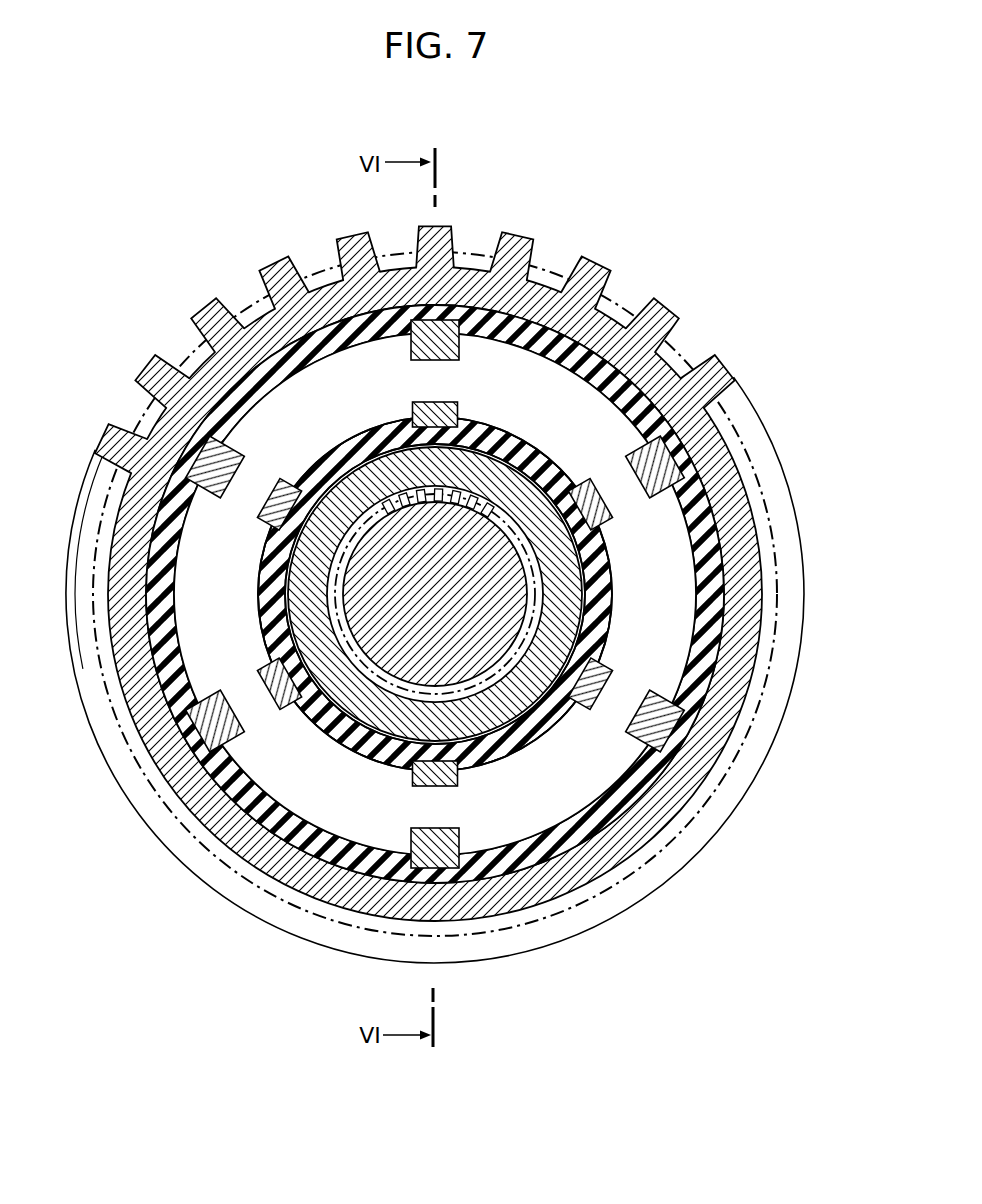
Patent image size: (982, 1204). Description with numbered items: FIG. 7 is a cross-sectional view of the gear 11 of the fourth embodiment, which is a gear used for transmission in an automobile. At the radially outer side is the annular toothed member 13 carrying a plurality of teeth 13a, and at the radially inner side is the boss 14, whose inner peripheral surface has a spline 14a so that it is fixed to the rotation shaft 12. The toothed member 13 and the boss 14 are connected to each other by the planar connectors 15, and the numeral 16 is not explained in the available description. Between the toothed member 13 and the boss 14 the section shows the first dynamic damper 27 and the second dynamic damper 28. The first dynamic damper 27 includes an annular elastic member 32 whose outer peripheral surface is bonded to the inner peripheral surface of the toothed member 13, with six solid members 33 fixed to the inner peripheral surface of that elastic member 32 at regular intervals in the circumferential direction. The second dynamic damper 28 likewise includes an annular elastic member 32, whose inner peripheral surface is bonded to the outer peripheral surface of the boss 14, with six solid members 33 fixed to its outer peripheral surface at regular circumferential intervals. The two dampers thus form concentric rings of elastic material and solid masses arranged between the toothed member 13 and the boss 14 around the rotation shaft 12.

The gear 11 is at (707, 324).
The rotation shaft 12 is at (423, 606).
The annular toothed member 13 is at (428, 550).
The teeth 13a is at (340, 247).
The boss 14 is at (435, 574).
The spline 14a is at (447, 503).
The planar connector 15 is at (668, 582).
The plate 16 is at (207, 624).
The first dynamic damper 27 is at (378, 355).
The second dynamic damper 28 is at (557, 450).
The annular elastic member 32 is at (489, 331).
The solid member 33 is at (436, 357).